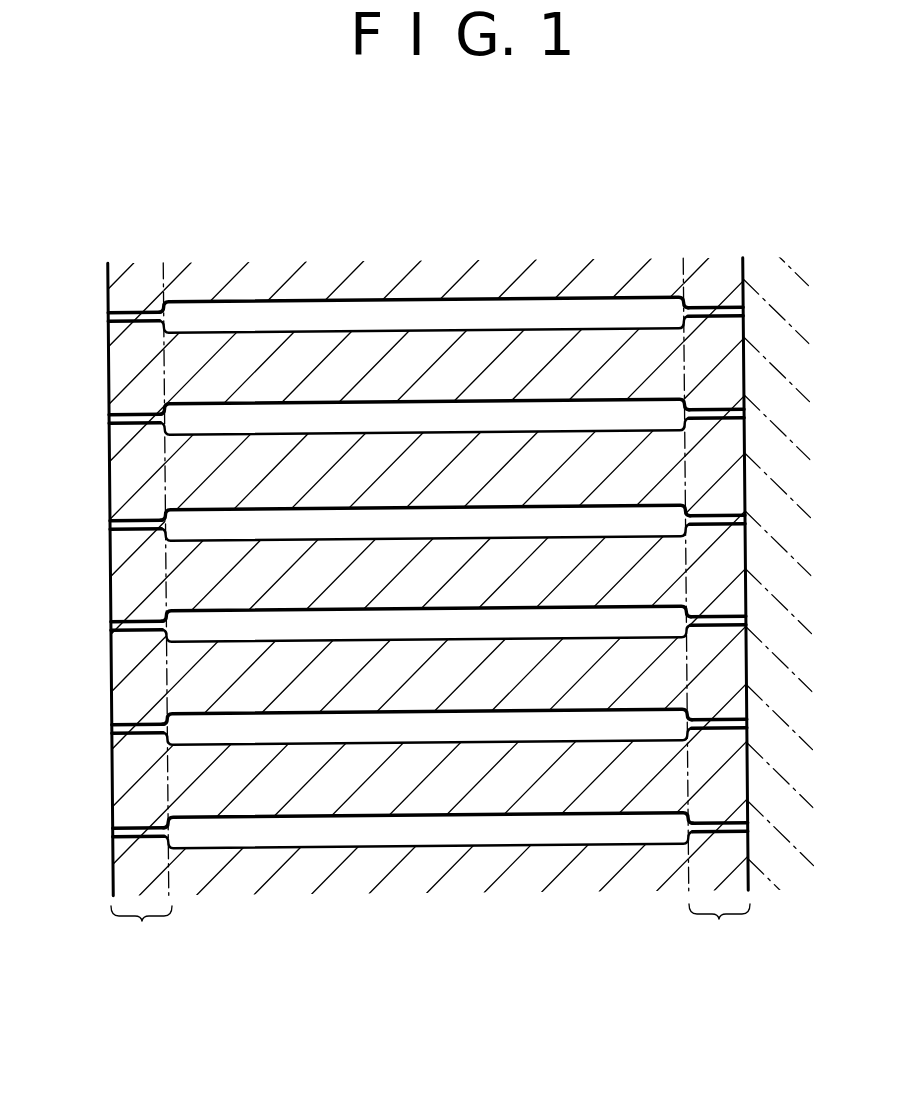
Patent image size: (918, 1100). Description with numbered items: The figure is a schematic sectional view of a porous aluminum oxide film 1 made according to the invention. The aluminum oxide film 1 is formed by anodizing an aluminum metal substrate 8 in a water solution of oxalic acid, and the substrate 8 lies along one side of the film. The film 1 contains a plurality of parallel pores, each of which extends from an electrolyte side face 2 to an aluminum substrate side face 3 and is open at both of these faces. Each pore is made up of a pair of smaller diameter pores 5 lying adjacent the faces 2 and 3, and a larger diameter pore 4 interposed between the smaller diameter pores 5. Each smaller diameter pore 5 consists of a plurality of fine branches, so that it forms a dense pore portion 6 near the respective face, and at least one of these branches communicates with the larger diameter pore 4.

The aluminum oxide film 1 is at (437, 283).
The electrolyte side face 2 is at (109, 478).
The aluminum substrate side face 3 is at (752, 590).
The larger diameter pore 4 is at (557, 312).
The smaller diameter pores 5 is at (136, 310).
The dense pore portion 6 is at (430, 932).
The aluminum metal substrate 8 is at (766, 270).